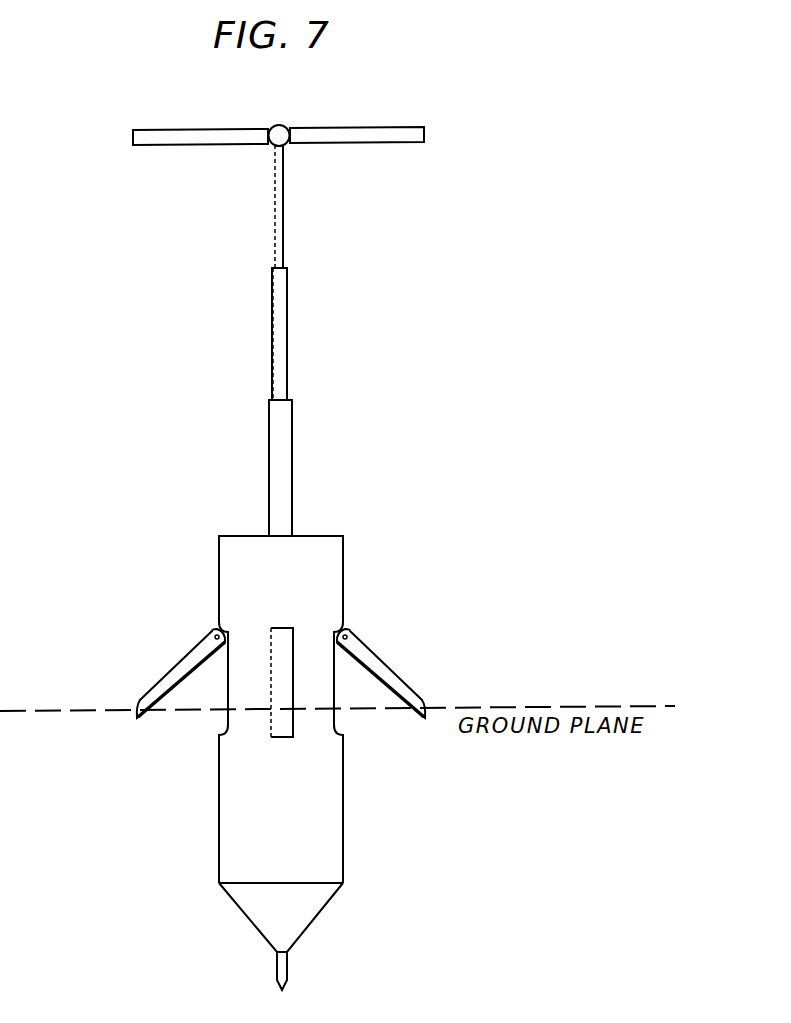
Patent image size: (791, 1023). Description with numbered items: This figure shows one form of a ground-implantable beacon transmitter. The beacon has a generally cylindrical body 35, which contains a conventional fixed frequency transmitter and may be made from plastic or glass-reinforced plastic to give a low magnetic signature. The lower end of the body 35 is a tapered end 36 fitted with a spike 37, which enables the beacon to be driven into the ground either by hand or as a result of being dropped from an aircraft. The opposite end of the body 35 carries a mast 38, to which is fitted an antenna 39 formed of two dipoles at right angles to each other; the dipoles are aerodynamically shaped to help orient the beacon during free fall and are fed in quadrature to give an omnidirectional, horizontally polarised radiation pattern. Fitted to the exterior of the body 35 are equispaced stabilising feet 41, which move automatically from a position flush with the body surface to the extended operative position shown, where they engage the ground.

The body 35 is at (292, 819).
The tapered end 36 is at (297, 923).
The spike 37 is at (288, 965).
The mast 38 is at (287, 333).
The antenna 39 is at (392, 144).
The stabilising feet 41 is at (195, 647).